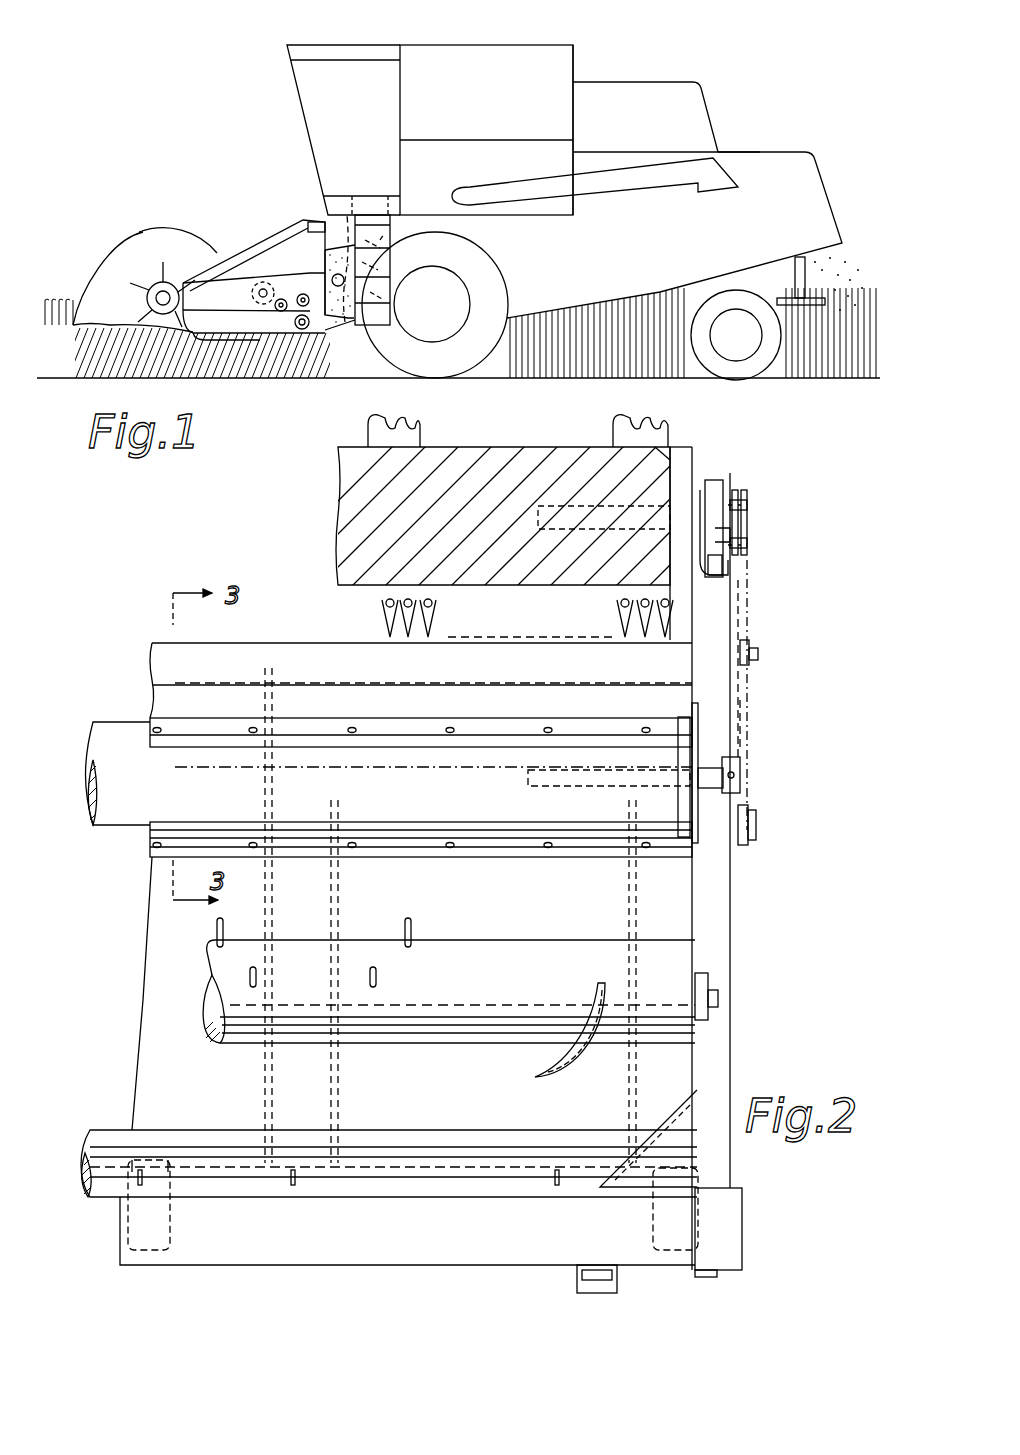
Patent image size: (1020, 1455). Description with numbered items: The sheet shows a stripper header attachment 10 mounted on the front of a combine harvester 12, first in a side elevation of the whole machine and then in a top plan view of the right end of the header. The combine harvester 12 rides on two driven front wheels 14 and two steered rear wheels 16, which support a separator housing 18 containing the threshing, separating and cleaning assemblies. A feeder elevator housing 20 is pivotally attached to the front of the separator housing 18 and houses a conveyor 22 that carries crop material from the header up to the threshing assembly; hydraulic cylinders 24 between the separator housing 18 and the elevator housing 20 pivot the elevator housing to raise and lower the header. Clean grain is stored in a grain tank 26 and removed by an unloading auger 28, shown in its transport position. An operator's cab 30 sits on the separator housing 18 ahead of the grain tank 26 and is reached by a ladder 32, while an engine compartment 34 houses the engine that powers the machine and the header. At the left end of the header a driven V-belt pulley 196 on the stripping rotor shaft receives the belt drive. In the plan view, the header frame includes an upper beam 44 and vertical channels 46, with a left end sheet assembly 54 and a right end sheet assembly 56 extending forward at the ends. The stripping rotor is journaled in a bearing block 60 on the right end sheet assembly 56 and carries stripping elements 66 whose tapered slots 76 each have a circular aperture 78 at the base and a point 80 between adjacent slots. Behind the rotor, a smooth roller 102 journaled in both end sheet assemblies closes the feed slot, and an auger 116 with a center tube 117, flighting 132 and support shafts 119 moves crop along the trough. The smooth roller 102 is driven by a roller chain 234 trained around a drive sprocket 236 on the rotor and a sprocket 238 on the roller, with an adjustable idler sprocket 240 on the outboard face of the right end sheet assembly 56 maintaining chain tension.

In FIG. 1, the stripper header attachment 10 is at (234, 227).
In FIG. 1, the combine harvester 12 is at (789, 127).
In FIG. 1, the driven front wheels 14 is at (493, 283).
In FIG. 1, the steered rear wheels 16 is at (757, 360).
In FIG. 1, the separator housing 18 is at (732, 167).
In FIG. 1, the feeder elevator housing 20 is at (338, 255).
In FIG. 1, the conveyor 22 is at (330, 268).
In FIG. 1, the hydraulic cylinders 24 is at (345, 322).
In FIG. 1, the grain tank 26 is at (557, 57).
In FIG. 1, the unloading auger 28 is at (647, 175).
In FIG. 1, the operator's work station and cab 30 is at (297, 95).
In FIG. 1, the ladder 32 is at (392, 290).
In FIG. 1, the engine compartment 34 is at (695, 105).
In FIG. 2, the upper beam 44 is at (120, 1220).
In FIG. 2, the vertical channels 46 is at (132, 1265).
In FIG. 1, the left end sheet assembly 54 is at (210, 328).
In FIG. 2, the right end sheet assembly 56 is at (735, 893).
In FIG. 2, the bearing block 60 is at (712, 480).
In FIG. 2, the stripping elements 66 is at (392, 442).
In FIG. 2, the tapered slots 76 is at (405, 630).
In FIG. 2, the circular aperture 78 is at (658, 450).
In FIG. 2, the point 80 is at (430, 633).
In FIG. 2, the smooth roller 102 is at (103, 735).
In FIG. 2, the auger 116 is at (217, 962).
In FIG. 2, the center tube 117 is at (223, 1012).
In FIG. 2, the support shafts 119 is at (708, 995).
In FIG. 2, the flighting 132 is at (525, 1055).
In FIG. 1, the driven V-belt pulley 196 is at (155, 290).
In FIG. 2, the roller chain 234 is at (747, 547).
In FIG. 2, the drive sprocket 236 is at (740, 507).
In FIG. 2, the sprocket 238 is at (742, 755).
In FIG. 2, the adjustable idler sprocket 240 is at (740, 638).